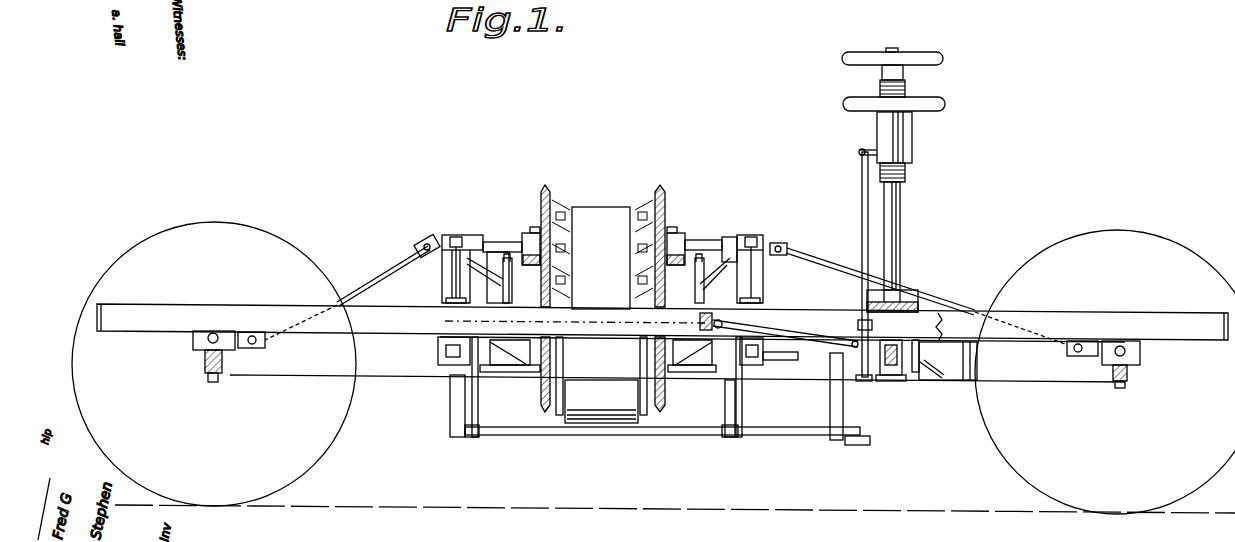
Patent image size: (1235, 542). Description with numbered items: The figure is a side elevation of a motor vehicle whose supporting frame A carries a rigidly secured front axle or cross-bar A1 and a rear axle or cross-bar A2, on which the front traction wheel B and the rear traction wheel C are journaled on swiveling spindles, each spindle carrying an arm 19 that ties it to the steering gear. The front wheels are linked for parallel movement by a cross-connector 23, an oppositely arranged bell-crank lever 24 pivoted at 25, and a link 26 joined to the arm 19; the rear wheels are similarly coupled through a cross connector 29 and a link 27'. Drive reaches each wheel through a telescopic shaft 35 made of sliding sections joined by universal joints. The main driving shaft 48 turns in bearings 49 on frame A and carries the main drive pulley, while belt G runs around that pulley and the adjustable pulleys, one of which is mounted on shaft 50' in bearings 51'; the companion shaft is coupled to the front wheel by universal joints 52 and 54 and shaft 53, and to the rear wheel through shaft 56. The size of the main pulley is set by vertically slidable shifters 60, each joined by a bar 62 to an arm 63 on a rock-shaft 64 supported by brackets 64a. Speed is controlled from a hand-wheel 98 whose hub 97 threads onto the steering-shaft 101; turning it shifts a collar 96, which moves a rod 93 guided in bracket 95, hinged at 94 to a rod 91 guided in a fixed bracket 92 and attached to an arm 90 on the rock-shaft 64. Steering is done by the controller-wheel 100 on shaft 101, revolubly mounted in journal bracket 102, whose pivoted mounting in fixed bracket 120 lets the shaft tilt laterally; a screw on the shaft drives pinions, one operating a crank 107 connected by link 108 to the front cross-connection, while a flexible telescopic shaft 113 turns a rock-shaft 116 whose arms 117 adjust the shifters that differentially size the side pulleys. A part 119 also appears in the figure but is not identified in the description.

The arm 19 is at (1125, 386).
The cross-connector 23 is at (980, 360).
The bell-crank lever 24 is at (950, 384).
The pivot 25 is at (966, 412).
The link 26 is at (1042, 383).
The link 27' is at (400, 392).
The cross connector 29 is at (775, 370).
The telescopic shaft 35 is at (242, 305).
The main-driving shaft 48 is at (790, 360).
The bearings 49 is at (436, 352).
The shaft 50' is at (610, 216).
The bearings 51' is at (617, 246).
The universal joint 52 is at (782, 246).
The shaft 53 is at (958, 298).
The universal joint 54 is at (1079, 356).
The shaft 56 is at (378, 256).
The shifter 60 is at (470, 286).
The link 62 is at (480, 398).
The arm 63 is at (475, 440).
The rock-shaft 64 is at (602, 437).
The brackets 64a is at (455, 420).
The arm 90 is at (840, 445).
The rod 91 is at (846, 410).
The fixed bracket 92 is at (850, 330).
The rod 93 is at (847, 265).
The hinge 94 is at (925, 296).
The bracket 95 is at (825, 240).
The collar 96 is at (948, 153).
The hub 97 is at (945, 128).
The hand-wheel 98 is at (918, 95).
The controller-wheel 100 is at (943, 60).
The steering-shaft 101 is at (948, 80).
The journal bracket 102 is at (916, 292).
The crank 107 is at (921, 352).
The link 108 is at (920, 380).
The flexible telescopic shaft 113 is at (788, 455).
The rock-shaft 116 is at (558, 321).
The arm 117 is at (598, 278).
The link 119 is at (740, 362).
The fixed bracket 120 is at (905, 285).
The supporting-frame A is at (206, 346).
The front axle A1 is at (1133, 364).
The rear axle A2 is at (217, 357).
The front traction wheel B is at (1124, 230).
The rear traction wheel C is at (218, 222).
The belt G is at (601, 258).